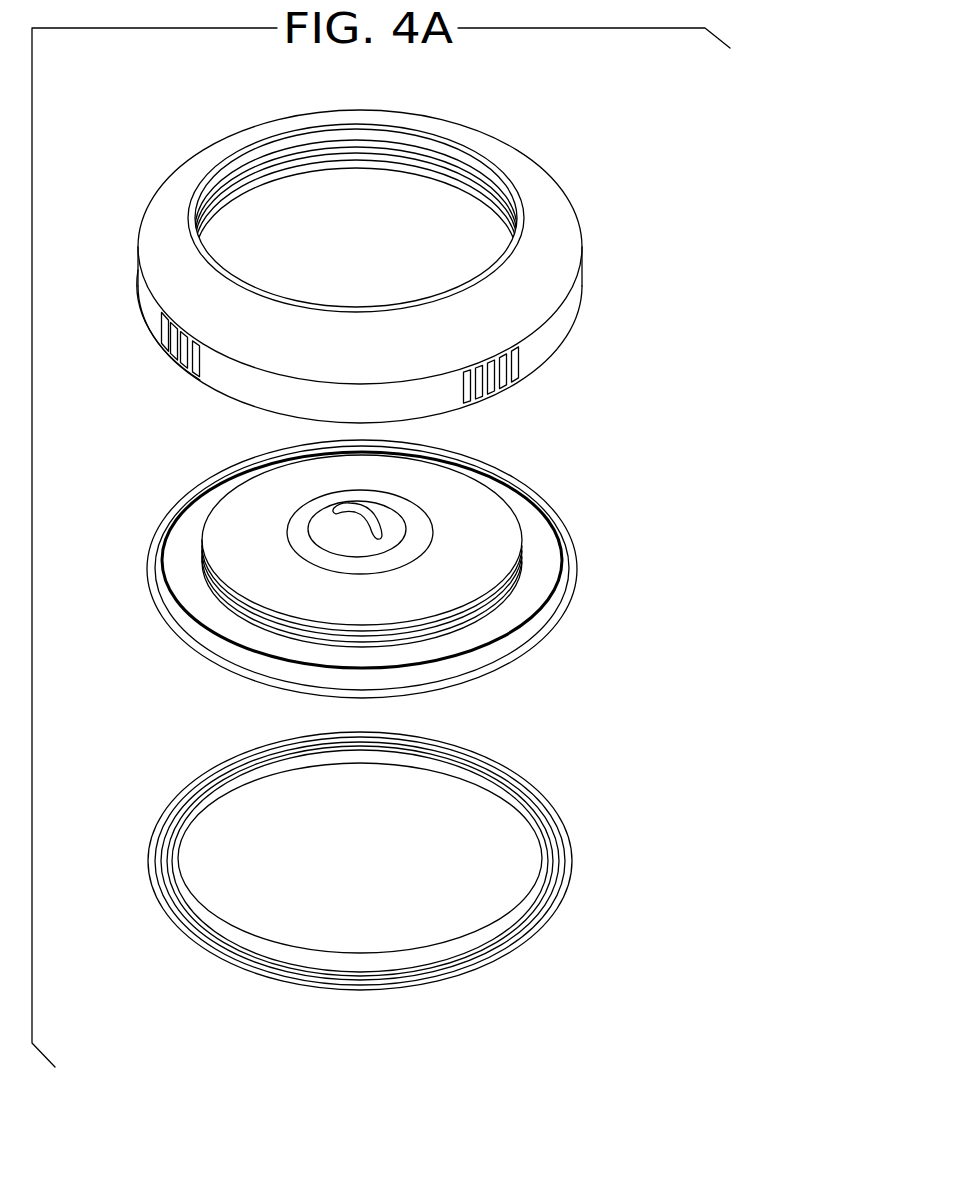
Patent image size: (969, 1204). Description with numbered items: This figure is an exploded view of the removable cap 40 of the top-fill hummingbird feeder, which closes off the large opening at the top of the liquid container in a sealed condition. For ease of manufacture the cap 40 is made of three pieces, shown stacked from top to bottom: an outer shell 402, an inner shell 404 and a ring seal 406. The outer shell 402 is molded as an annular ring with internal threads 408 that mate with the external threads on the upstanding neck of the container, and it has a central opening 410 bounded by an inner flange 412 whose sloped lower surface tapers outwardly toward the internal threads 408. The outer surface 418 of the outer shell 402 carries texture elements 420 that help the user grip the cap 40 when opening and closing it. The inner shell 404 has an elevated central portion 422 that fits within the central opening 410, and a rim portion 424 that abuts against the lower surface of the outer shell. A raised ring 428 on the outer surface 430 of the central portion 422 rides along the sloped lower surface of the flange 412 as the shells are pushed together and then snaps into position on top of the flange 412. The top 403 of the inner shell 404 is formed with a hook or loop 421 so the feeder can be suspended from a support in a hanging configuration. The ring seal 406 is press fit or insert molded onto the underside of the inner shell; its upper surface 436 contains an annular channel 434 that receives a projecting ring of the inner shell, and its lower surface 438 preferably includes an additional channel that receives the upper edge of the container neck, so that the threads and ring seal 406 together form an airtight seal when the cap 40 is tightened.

The removable cap 40 is at (669, 198).
The outer shell 402 is at (553, 273).
The top of the inner shell 403 is at (300, 522).
The inner shell 404 is at (520, 482).
The ring seal 406 is at (563, 863).
The internal threads 408 is at (430, 163).
The central opening 410 is at (297, 304).
The inner flange 412 is at (203, 225).
The outer surface of the outer shell 418 is at (143, 303).
The texture elements 420 is at (183, 346).
The hook or loop 421 is at (382, 518).
The elevated central portion 422 is at (460, 592).
The rim portion 424 is at (543, 548).
The raised ring 428 is at (268, 625).
The outer surface of the central portion 430 is at (224, 597).
The annular channel 434 is at (548, 813).
The upper surface of the ring seal 436 is at (517, 782).
The lower surface of the ring seal 438 is at (187, 938).